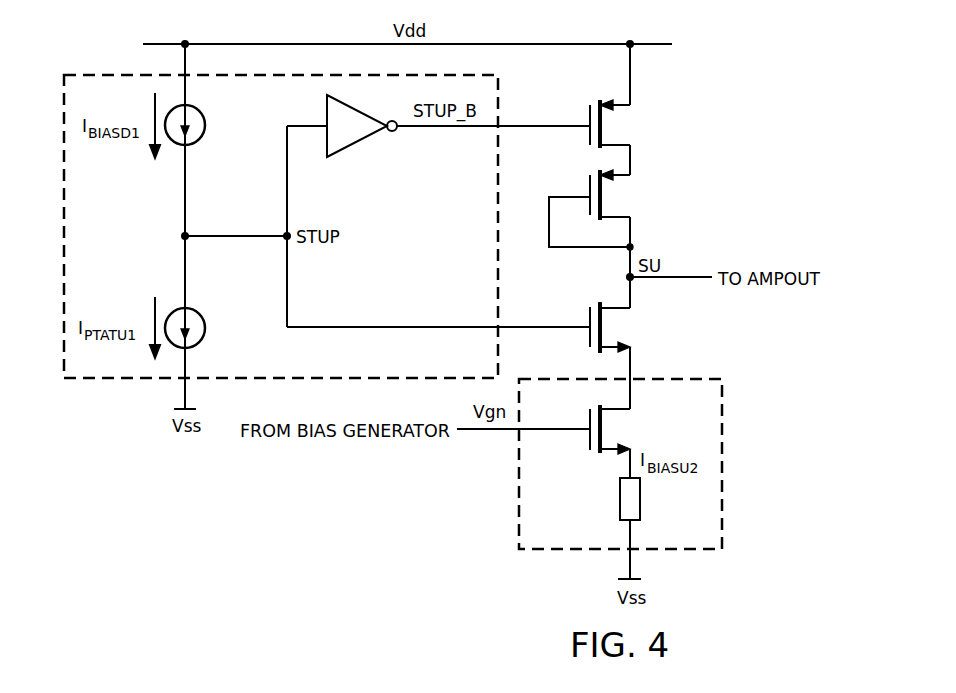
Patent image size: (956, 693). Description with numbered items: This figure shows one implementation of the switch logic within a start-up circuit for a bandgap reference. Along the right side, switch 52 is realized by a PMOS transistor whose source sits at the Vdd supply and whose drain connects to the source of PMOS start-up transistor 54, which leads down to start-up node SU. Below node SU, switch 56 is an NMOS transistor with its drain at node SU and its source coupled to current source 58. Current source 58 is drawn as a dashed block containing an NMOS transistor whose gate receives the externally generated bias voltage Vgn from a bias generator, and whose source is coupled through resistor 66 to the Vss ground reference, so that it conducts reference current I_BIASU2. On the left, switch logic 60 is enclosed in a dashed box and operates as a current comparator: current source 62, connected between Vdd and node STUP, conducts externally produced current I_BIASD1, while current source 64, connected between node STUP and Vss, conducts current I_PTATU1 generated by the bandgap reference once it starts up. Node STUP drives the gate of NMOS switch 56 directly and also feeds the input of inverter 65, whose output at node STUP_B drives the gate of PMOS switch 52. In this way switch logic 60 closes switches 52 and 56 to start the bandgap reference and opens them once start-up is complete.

The switch logic 60 is at (108, 68).
The current source 62 is at (205, 126).
The current source / NMOS transistor 64 is at (205, 329).
The inverter 65 is at (357, 146).
The switch 52 is at (585, 113).
The PMOS start-up transistor 54 is at (585, 183).
The switch 56 is at (587, 338).
The current source 58 is at (732, 478).
The resistor 66 is at (643, 500).